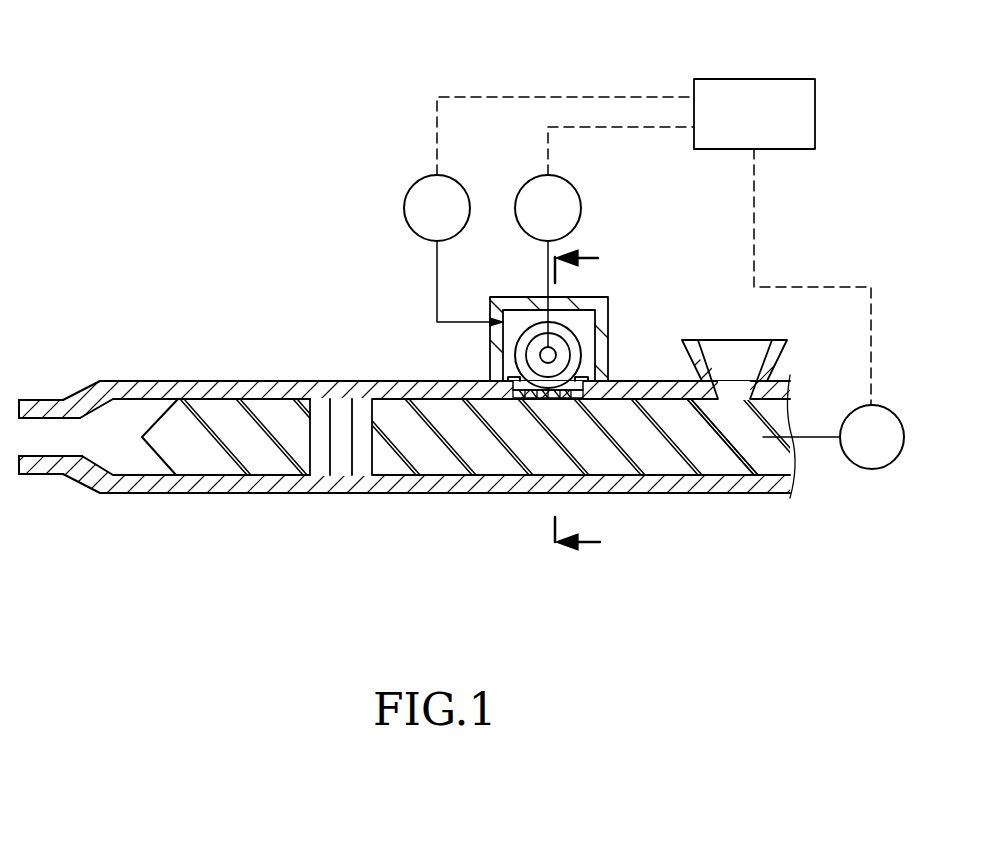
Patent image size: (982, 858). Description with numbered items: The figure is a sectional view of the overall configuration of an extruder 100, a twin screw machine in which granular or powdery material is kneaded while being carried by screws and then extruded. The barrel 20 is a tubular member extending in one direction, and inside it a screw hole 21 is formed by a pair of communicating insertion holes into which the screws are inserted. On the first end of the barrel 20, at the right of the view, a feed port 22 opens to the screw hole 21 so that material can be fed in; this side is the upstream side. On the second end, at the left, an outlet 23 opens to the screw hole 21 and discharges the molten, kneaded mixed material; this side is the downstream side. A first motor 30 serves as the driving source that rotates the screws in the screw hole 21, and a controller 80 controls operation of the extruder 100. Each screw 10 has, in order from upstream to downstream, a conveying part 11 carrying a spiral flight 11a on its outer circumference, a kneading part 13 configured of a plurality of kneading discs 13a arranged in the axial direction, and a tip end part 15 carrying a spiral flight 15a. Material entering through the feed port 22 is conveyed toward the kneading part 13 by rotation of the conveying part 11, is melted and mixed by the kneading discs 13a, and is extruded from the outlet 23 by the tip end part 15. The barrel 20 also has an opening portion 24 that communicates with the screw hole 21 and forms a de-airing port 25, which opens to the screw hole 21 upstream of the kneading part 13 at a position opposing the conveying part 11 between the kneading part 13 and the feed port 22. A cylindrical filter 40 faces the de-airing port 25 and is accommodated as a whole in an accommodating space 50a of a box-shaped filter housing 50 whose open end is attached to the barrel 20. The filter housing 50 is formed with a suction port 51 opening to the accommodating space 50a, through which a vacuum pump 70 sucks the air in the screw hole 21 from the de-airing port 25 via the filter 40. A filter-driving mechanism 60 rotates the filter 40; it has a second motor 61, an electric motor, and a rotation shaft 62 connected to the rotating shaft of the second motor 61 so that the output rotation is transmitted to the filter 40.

The extruder 100 is at (104, 93).
The screw 10 is at (143, 414).
The conveying part 11 is at (655, 476).
The spiral flight 11a is at (693, 464).
The kneading part 13 is at (338, 476).
The kneading discs 13a is at (357, 397).
The tip end part 15 is at (219, 477).
The spiral flight 15a is at (262, 462).
The barrel 20 is at (748, 493).
The screw hole 21 is at (458, 470).
The feed port 22 is at (745, 375).
The outlet 23 is at (40, 440).
The opening portion 24 is at (505, 381).
The de-airing port 25 is at (541, 402).
The first motor 30 is at (863, 466).
The filter 40 is at (583, 338).
The filter housing 50 is at (503, 296).
The accommodating space 50a is at (520, 309).
The suction port 51 is at (490, 319).
The filter-driving mechanism 60 is at (590, 244).
The second motor 61 is at (581, 188).
The rotation shaft 62 is at (557, 355).
The vacuum pump 70 is at (412, 188).
The controller 80 is at (788, 79).